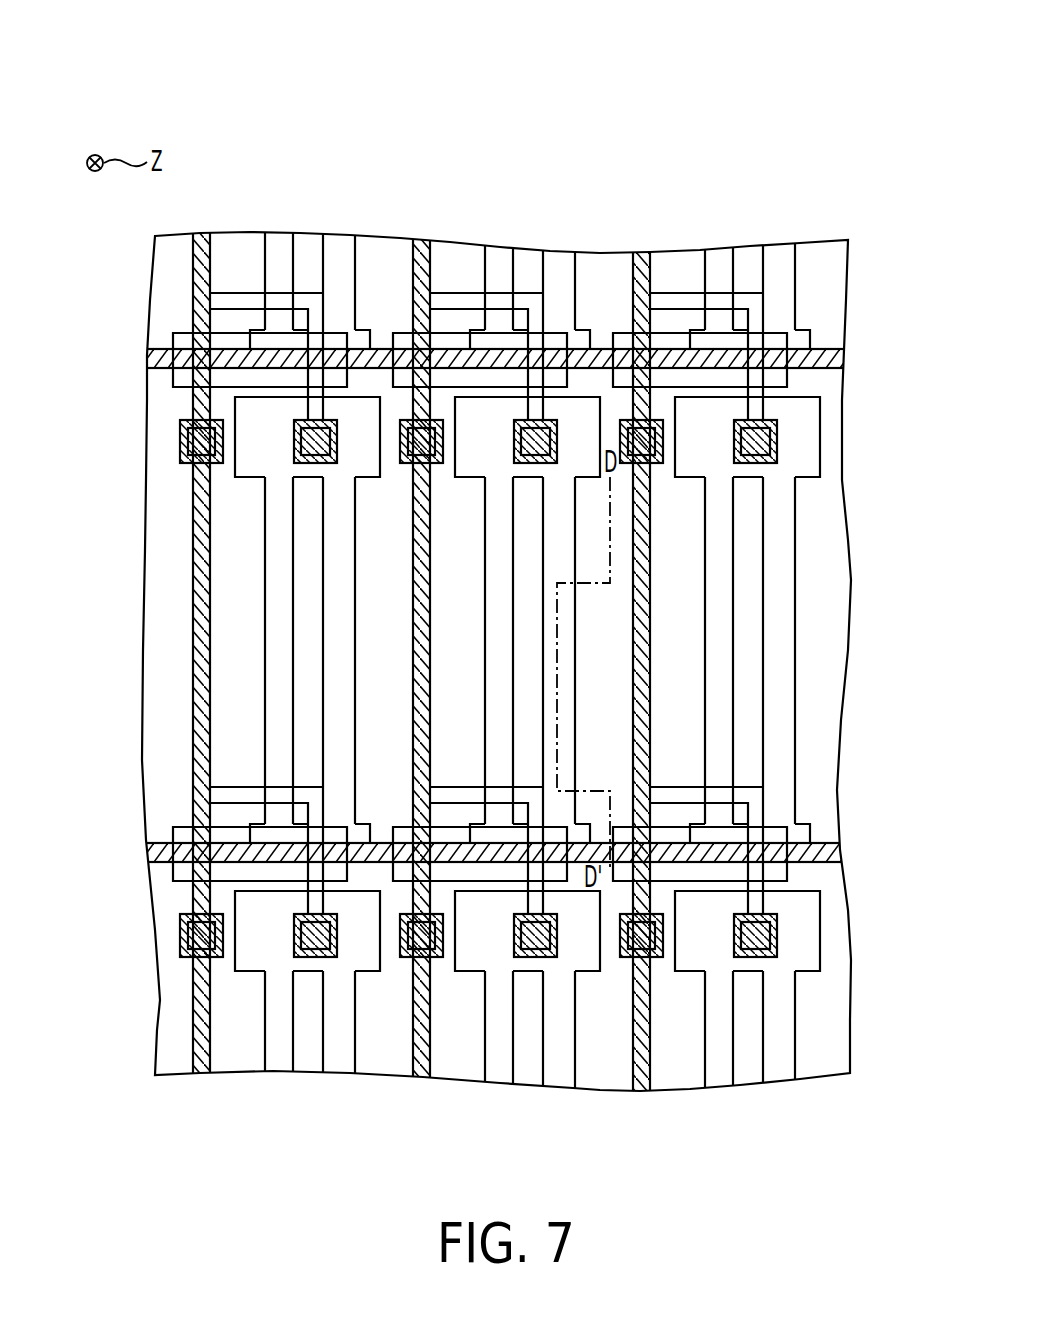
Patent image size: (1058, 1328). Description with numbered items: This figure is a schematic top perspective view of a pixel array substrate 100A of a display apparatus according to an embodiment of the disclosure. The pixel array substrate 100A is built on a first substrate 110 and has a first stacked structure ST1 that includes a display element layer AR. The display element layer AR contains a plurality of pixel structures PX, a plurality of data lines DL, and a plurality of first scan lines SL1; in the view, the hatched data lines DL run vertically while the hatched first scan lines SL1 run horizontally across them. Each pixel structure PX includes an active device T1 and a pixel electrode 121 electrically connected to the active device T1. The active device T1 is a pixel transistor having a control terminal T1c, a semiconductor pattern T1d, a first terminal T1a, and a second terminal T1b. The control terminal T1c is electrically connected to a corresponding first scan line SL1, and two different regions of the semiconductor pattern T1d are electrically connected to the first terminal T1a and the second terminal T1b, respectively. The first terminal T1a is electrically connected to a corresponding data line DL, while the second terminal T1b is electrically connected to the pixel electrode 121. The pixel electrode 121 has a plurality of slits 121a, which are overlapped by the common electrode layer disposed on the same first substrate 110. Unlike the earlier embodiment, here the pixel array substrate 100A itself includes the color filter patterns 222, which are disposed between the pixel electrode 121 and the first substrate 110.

The pixel array substrate 100A is at (499, 570).
The first substrate 110 is at (855, 1044).
The first stacked structure ST1 is at (511, 45).
The display element layer AR is at (556, 13).
The pixel structure PX is at (606, 2).
The active device T1 is at (776, 113).
The first terminal T1a is at (405, 464).
The second terminal T1b is at (515, 464).
The control terminal T1c is at (400, 349).
The semiconductor pattern T1d is at (457, 292).
The pixel electrode 121 is at (484, 677).
The slits 121a is at (519, 553).
The data line DL is at (432, 266).
The first scan line SL1 is at (152, 347).
The color filter pattern 222 is at (455, 593).